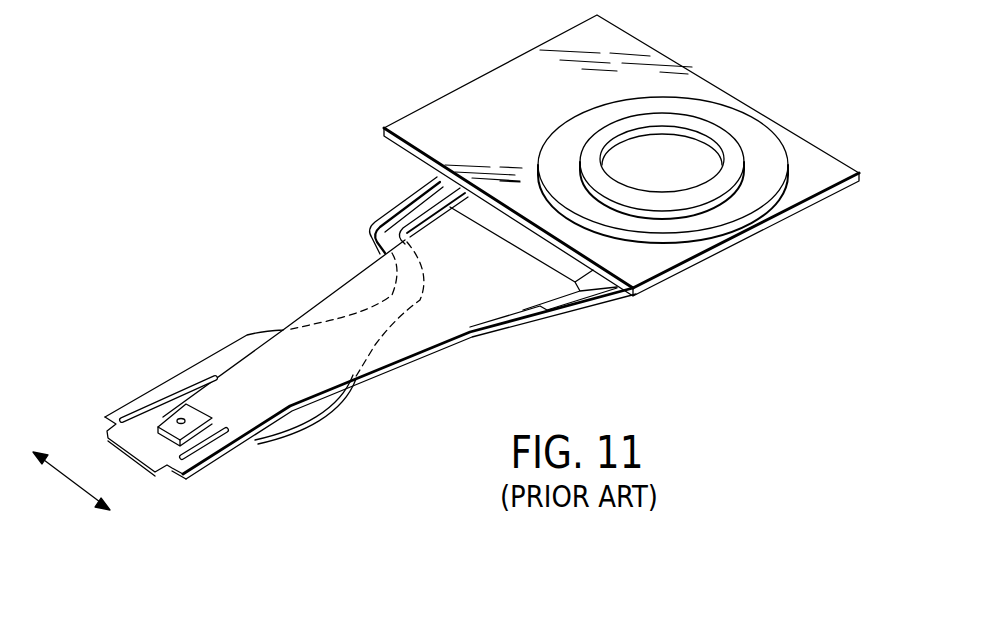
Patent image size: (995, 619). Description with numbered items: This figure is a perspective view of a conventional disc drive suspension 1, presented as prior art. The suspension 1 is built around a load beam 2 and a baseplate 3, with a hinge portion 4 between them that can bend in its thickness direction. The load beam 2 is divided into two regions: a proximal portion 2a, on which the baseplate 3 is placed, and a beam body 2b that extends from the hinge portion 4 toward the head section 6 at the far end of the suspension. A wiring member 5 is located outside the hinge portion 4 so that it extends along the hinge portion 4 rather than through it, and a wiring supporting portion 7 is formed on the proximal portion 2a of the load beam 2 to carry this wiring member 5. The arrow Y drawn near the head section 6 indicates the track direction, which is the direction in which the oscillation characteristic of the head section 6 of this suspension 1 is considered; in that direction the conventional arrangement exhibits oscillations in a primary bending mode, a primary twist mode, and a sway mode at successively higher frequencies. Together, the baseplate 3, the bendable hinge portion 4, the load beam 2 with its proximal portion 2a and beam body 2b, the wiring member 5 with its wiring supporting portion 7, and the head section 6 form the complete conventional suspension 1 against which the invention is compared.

The disc drive suspension 1 is at (262, 218).
The load beam 2 is at (340, 283).
The proximal portion 2a is at (664, 258).
The beam body 2b is at (470, 330).
The baseplate 3 is at (745, 126).
The hinge portion 4 is at (606, 298).
The wiring member 5 is at (383, 212).
The head section 6 is at (173, 486).
The wiring supporting portion 7 is at (466, 100).
The track direction arrow Y is at (92, 490).